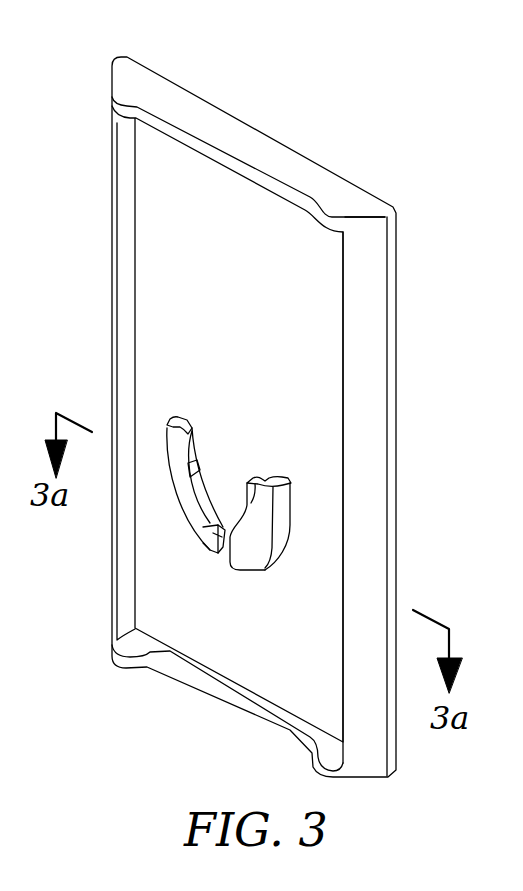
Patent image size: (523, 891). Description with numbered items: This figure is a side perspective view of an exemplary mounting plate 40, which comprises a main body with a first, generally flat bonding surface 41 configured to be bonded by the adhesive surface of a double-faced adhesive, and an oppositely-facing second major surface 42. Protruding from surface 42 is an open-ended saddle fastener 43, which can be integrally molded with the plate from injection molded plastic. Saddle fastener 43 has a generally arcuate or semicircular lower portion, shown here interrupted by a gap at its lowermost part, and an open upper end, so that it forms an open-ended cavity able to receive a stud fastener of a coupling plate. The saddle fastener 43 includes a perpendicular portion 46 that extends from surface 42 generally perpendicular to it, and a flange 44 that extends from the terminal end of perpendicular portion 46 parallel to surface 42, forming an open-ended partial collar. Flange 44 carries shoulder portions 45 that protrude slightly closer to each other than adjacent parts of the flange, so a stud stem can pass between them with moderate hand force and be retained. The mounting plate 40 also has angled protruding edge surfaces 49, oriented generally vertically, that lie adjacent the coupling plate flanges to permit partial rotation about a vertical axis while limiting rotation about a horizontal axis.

The mounting plate 40 is at (261, 397).
The bonding surface 41 is at (292, 417).
The second major surface 42 is at (242, 295).
The saddle fastener 43 is at (150, 468).
The flange 44 is at (192, 426).
The shoulder portions 45 is at (245, 504).
The perpendicular portion 46 is at (283, 517).
The angled protruding edge surfaces 49 is at (370, 277).